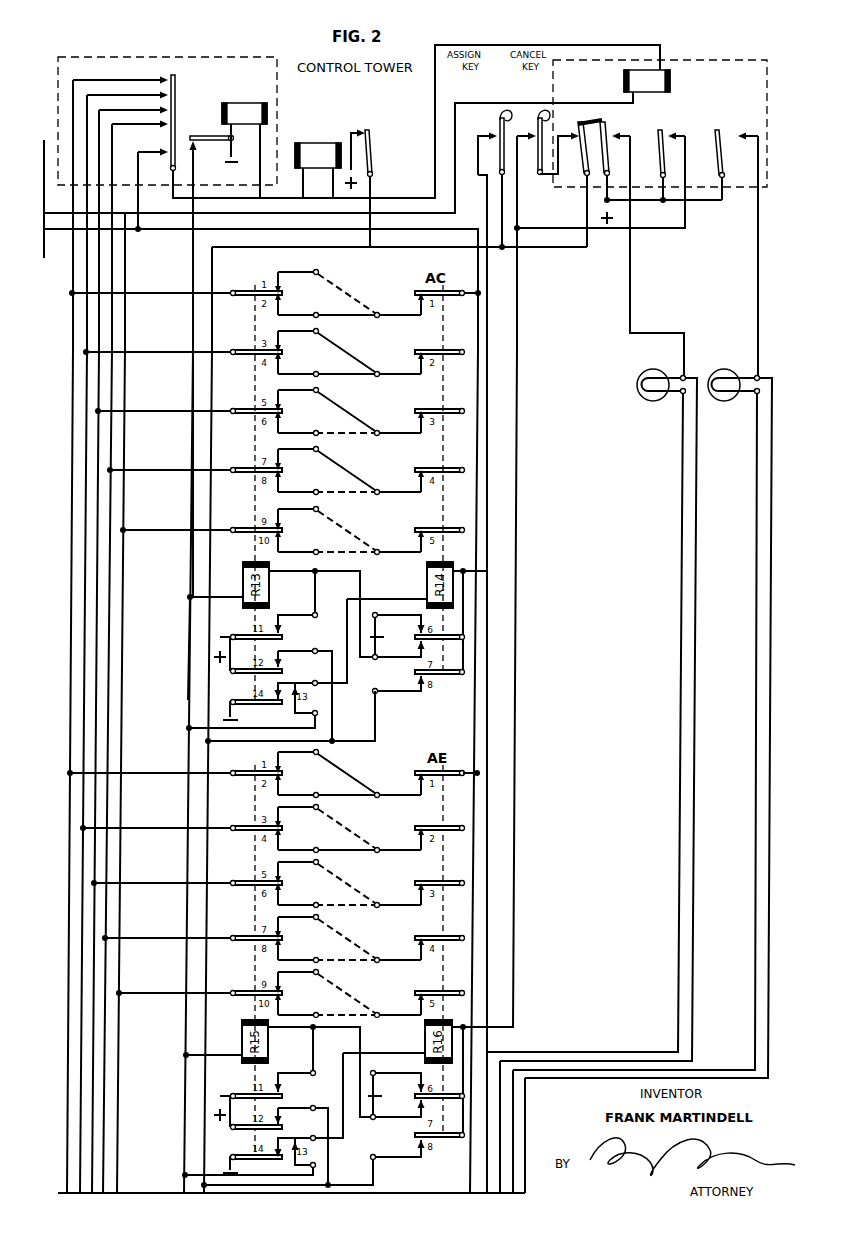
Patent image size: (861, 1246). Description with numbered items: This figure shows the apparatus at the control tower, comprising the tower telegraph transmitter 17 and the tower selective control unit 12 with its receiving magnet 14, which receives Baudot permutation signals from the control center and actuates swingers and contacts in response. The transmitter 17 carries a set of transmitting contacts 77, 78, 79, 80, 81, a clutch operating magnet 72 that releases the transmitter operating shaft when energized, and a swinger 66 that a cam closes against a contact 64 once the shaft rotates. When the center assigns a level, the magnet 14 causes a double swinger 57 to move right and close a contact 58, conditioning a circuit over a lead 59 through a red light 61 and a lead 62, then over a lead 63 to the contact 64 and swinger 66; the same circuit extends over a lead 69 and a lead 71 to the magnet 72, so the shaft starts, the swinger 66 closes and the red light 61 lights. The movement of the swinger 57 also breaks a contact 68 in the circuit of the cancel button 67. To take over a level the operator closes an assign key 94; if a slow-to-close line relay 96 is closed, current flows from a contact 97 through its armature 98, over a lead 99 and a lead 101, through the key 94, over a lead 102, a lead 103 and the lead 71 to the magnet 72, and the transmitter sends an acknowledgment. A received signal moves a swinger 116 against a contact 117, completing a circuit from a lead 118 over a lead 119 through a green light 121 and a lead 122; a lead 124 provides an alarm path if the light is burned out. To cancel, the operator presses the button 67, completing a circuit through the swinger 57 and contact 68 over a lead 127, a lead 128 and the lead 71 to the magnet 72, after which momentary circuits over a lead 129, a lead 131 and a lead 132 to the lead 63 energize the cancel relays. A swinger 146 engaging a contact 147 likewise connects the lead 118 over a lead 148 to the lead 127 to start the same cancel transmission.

The telegraph transmitter 17 is at (153, 57).
The transmitting contact 77 is at (163, 79).
The transmitting contact 78 is at (166, 93).
The transmitting contact 79 is at (166, 108).
The transmitting contact 80 is at (166, 122).
The transmitting contact 81 is at (166, 148).
The swinger 66 is at (205, 134).
The contact 64 is at (197, 152).
The clutch operating magnet 72 is at (268, 110).
The slow-to-close line relay 96 is at (326, 143).
The contact 97 is at (359, 131).
The armature 98 is at (374, 136).
The selective control unit 12 is at (722, 60).
The receiving magnet 14 is at (624, 81).
The assign key 94 is at (502, 112).
The cancel button 67 is at (540, 112).
The contact 68 is at (580, 131).
The double swinger 57 is at (604, 120).
The contact 58 is at (618, 134).
The lead 59 is at (629, 305).
The swinger 146 is at (661, 128).
The contact 147 is at (673, 132).
The lead 148 is at (648, 230).
The swinger 116 is at (718, 128).
The contact 117 is at (732, 132).
The lead 118 is at (697, 202).
The lead 119 is at (759, 208).
The lead 99 is at (400, 249).
The lead 101 is at (505, 250).
The lead 102 is at (490, 380).
The red light 61 is at (645, 374).
The green light 121 is at (720, 373).
The lead 62 is at (682, 604).
The lead 69 is at (697, 636).
The lead 122 is at (757, 706).
The lead 124 is at (772, 725).
The lead 127 is at (517, 770).
The lead 71 is at (191, 514).
The lead 63 is at (190, 644).
The lead 103 is at (376, 706).
The lead 129 is at (361, 1046).
The lead 131 is at (343, 1102).
The lead 128 is at (358, 1184).
The lead 132 is at (186, 1172).